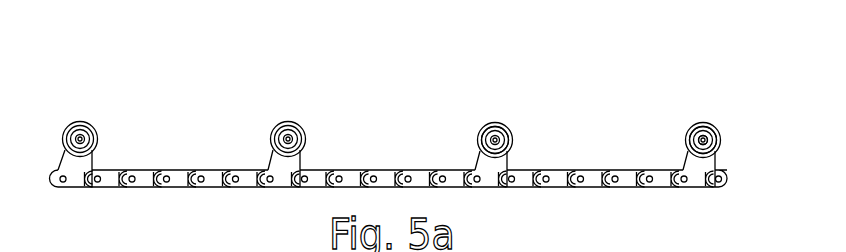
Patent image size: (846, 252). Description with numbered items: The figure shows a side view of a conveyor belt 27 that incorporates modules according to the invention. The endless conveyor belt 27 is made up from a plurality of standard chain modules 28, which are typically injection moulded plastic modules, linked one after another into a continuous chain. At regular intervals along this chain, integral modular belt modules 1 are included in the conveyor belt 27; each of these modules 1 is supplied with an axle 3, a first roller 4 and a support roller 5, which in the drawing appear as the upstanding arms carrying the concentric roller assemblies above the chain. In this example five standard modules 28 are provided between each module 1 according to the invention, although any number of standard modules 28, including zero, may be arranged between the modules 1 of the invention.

The integral modular belt module 1 is at (85, 163).
The axle 3 is at (720, 138).
The first roller 4 is at (507, 127).
The support roller 5 is at (479, 138).
The conveyor belt 27 is at (598, 96).
The standard chain module 28 is at (385, 176).